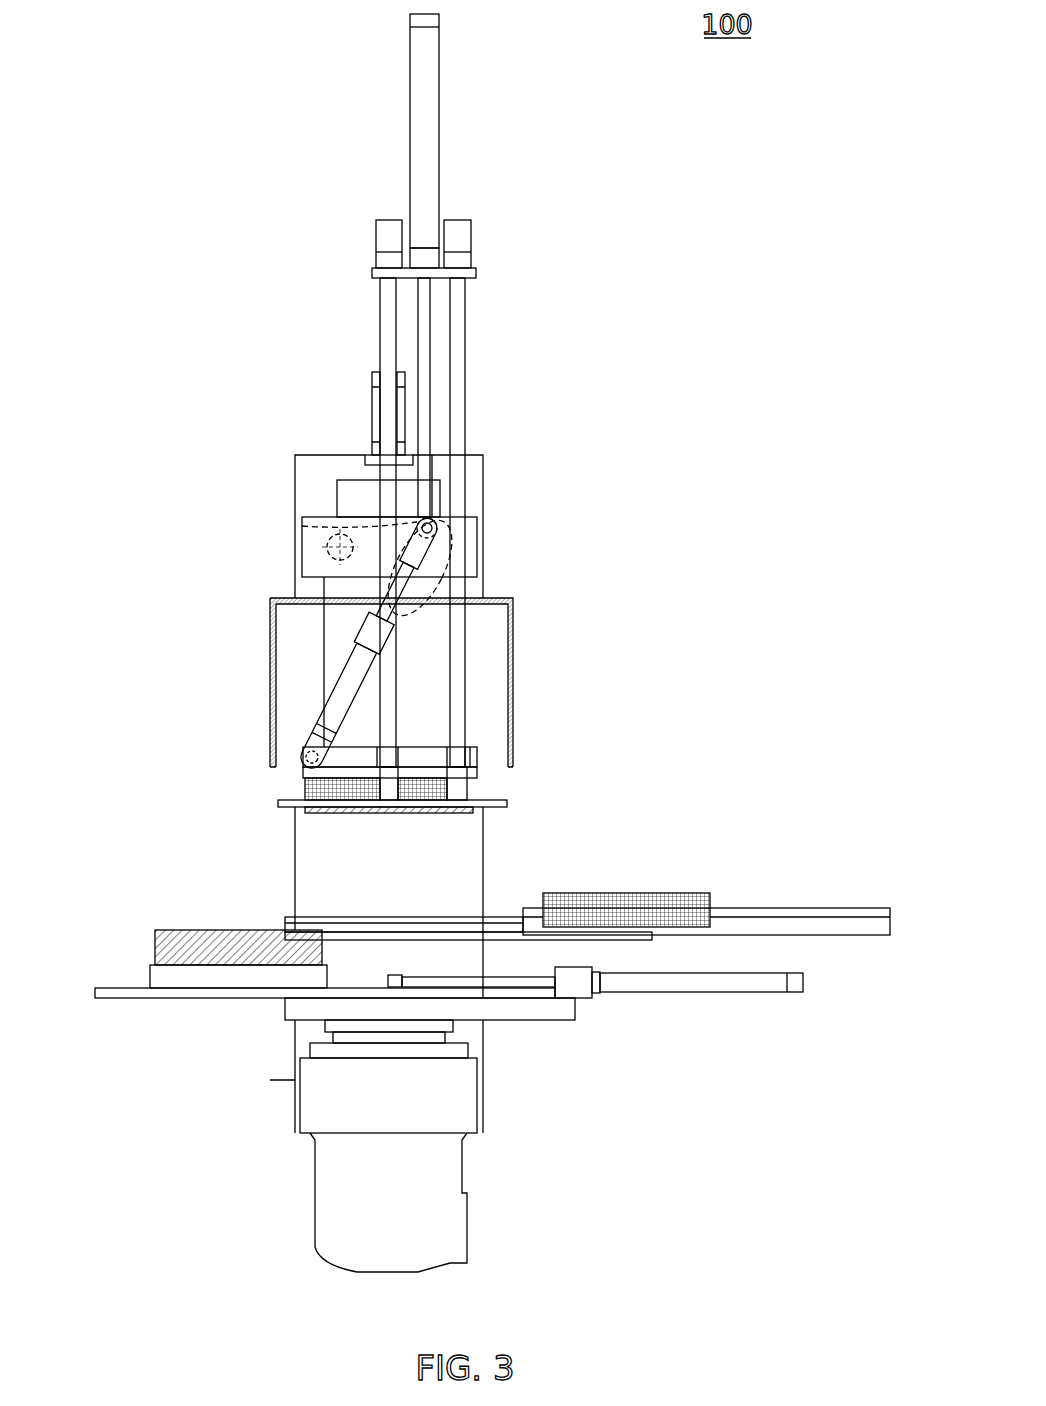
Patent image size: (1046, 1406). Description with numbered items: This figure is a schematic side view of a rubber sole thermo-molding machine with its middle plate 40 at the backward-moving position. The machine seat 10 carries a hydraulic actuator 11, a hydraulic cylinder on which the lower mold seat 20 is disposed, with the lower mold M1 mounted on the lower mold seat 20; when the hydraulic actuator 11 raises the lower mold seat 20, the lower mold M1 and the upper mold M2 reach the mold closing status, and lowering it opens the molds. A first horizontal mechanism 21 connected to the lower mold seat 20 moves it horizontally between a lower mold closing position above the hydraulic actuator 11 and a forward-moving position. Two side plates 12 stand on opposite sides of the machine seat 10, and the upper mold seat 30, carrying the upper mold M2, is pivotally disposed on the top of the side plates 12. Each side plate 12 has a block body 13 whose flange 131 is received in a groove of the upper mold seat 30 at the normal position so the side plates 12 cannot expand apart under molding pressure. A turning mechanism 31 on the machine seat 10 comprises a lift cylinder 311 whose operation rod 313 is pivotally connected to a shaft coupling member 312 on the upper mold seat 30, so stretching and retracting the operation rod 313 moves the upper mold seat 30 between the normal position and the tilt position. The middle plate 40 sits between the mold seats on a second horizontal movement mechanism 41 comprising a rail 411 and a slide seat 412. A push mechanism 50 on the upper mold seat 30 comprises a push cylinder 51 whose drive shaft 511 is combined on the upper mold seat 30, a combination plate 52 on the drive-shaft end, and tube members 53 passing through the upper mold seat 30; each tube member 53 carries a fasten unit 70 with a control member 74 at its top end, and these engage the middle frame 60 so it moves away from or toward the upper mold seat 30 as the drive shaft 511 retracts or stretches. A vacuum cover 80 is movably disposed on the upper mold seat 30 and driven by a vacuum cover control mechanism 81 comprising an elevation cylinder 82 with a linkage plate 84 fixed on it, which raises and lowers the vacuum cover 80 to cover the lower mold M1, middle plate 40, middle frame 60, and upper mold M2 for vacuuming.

The machine seat 10 is at (382, 1039).
The hydraulic actuator 11 is at (440, 1214).
The side plate 12 is at (296, 1082).
The block body 13 is at (352, 526).
The flange 131 is at (328, 532).
The lower mold seat 20 is at (155, 978).
The first horizontal mechanism 21 is at (697, 983).
The upper mold seat 30 is at (313, 567).
The turning mechanism 31 is at (317, 642).
The lift cylinder 311 is at (350, 655).
The shaft coupling member 312 is at (437, 522).
The operation rod 313 is at (395, 590).
The middle plate 40 is at (655, 905).
The second horizontal movement mechanism 41 is at (587, 828).
The rail 411 is at (498, 935).
The slide seat 412 is at (797, 924).
The push mechanism 50 is at (472, 390).
The push cylinder 51 is at (425, 130).
The drive shaft 511 is at (423, 352).
The combination plate 52 is at (470, 275).
The tube member 53 is at (456, 433).
The middle frame 60 is at (310, 812).
The fasten unit 70 is at (482, 790).
The control member 74 is at (462, 236).
The vacuum cover 80 is at (513, 680).
The vacuum cover control mechanism 81 is at (339, 379).
The elevation cylinder 82 is at (374, 408).
The linkage plate 84 is at (367, 458).
The lower mold M1 is at (160, 940).
The upper mold M2 is at (308, 788).